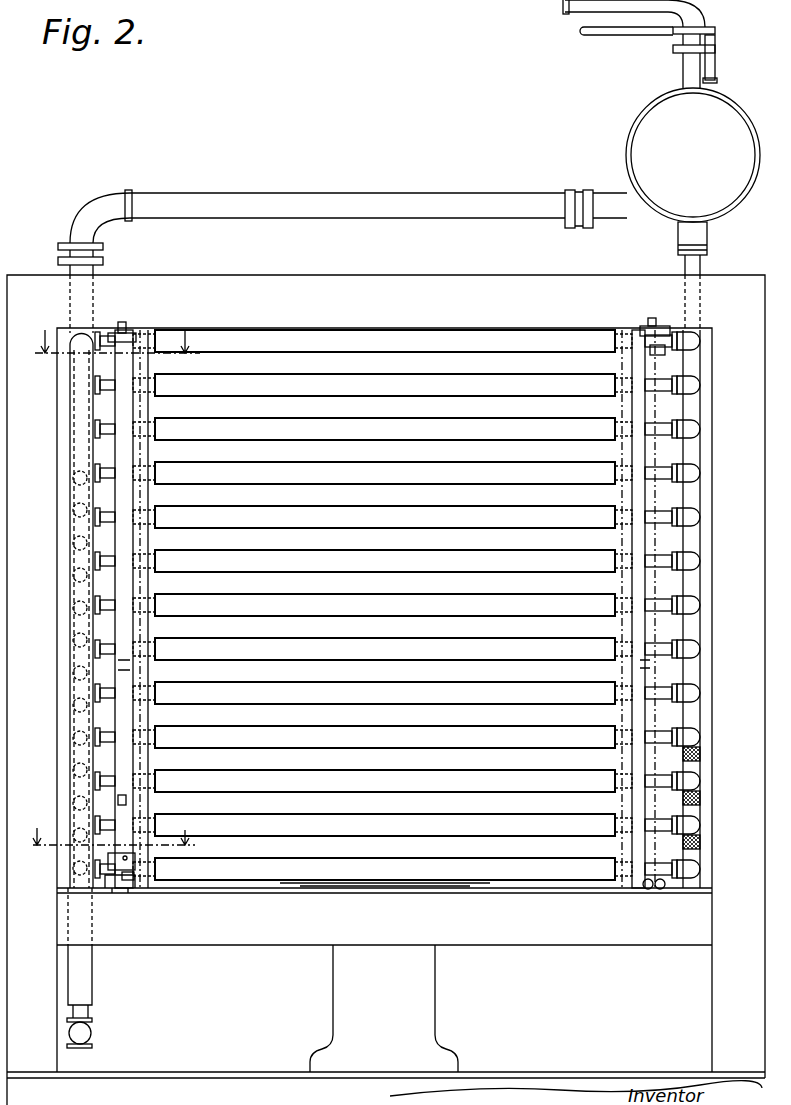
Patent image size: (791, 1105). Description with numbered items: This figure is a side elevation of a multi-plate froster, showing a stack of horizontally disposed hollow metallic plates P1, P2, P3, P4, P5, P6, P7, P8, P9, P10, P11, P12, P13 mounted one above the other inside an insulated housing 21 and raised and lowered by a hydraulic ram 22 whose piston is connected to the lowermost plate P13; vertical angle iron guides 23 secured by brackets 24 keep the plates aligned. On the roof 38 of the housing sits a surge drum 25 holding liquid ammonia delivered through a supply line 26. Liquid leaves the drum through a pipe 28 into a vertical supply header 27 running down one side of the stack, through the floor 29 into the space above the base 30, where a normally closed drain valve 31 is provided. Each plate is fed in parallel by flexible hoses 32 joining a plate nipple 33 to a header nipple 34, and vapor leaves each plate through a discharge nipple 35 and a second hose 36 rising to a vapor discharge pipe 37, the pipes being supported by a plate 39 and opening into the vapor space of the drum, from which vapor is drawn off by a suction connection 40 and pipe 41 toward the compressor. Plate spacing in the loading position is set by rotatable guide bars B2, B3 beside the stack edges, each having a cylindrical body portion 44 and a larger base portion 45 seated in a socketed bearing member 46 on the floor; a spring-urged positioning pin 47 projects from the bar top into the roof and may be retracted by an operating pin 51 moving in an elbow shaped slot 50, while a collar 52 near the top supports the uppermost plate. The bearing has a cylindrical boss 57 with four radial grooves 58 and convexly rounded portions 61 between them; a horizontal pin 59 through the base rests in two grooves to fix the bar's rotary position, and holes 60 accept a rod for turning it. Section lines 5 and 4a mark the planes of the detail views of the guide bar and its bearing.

The insulated housing 21 is at (734, 530).
The hydraulic ram 22 is at (437, 1016).
The vertical angle iron guide 23 is at (142, 666).
The bracket 24 is at (133, 620).
The surge drum 25 is at (650, 155).
The supply line 26 is at (584, 35).
The vertical supply header 27 is at (90, 430).
The pipe 28 is at (440, 212).
The floor 29 is at (272, 940).
The base 30 is at (243, 1082).
The valve 31 is at (92, 1036).
The flexible conduit or hose 32 is at (82, 388).
The nipple 33 is at (108, 470).
The second nipple 34 is at (74, 545).
The discharge nipple 35 is at (700, 648).
The second flexible conduit or hose 36 is at (692, 735).
The vapor discharge pipe 37 is at (698, 275).
The roof 38 is at (514, 293).
The plate 39 is at (706, 250).
The suction connection 40 is at (690, 62).
The pipe 41 is at (567, 10).
The cylindrical body portion 44 is at (122, 800).
The base portion 45 is at (95, 865).
The socketed bearing member 46 is at (126, 893).
The positioning and retaining pin 47 is at (122, 332).
The elbow shaped slot 50 is at (650, 366).
The operating pin 51 is at (640, 356).
The collar 52 is at (122, 352).
The vertical cylindrical boss 57 is at (135, 880).
The radially disposed grooves 58 is at (660, 889).
The horizontal pin 59 is at (115, 886).
The diametrically extending holes 60 is at (132, 862).
The convexly rounded portions 61 is at (652, 889).
The section line 5 is at (117, 332).
The section line 4a is at (108, 826).
The guide bar B2 is at (140, 548).
The guide bar B3 is at (640, 542).
The uppermost plate P1 is at (362, 346).
The plate P2 is at (362, 390).
The plate P3 is at (362, 434).
The plate P4 is at (362, 478).
The plate P5 is at (362, 522).
The plate P6 is at (362, 566).
The plate P7 is at (362, 610).
The plate P8 is at (362, 654).
The plate P9 is at (362, 698).
The plate P10 is at (362, 742).
The plate P11 is at (362, 786).
The plate P12 is at (362, 830).
The lowermost plate P13 is at (362, 874).